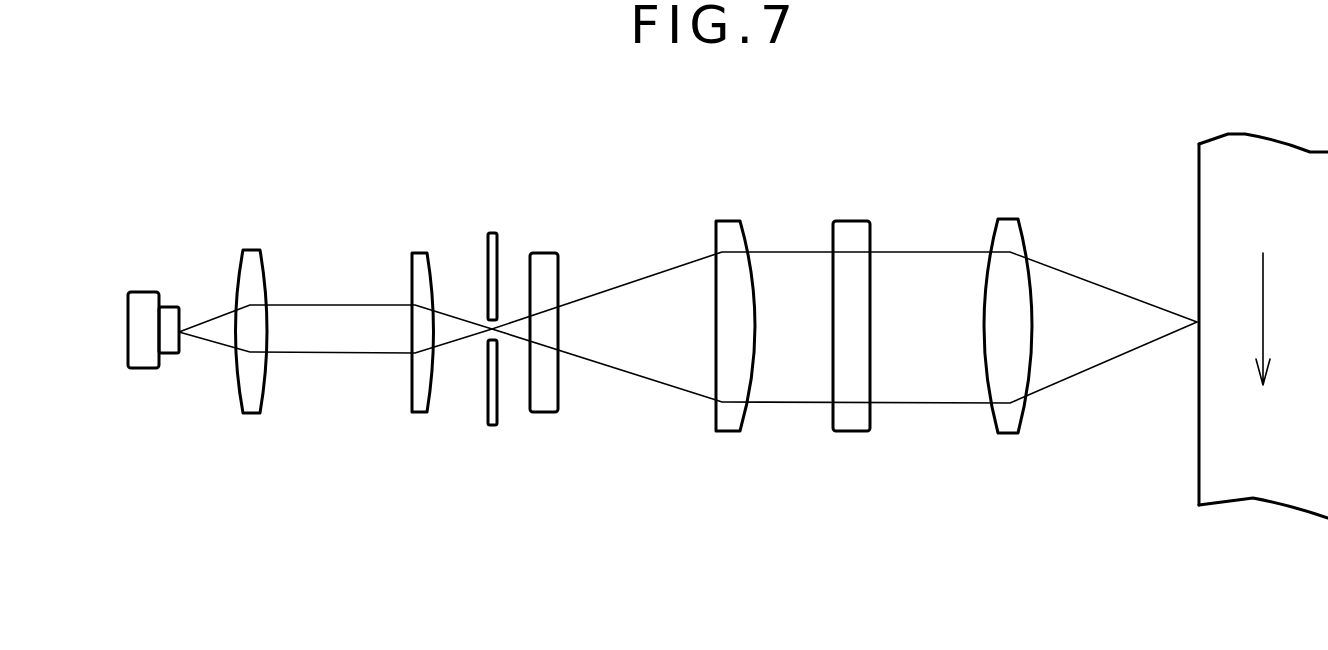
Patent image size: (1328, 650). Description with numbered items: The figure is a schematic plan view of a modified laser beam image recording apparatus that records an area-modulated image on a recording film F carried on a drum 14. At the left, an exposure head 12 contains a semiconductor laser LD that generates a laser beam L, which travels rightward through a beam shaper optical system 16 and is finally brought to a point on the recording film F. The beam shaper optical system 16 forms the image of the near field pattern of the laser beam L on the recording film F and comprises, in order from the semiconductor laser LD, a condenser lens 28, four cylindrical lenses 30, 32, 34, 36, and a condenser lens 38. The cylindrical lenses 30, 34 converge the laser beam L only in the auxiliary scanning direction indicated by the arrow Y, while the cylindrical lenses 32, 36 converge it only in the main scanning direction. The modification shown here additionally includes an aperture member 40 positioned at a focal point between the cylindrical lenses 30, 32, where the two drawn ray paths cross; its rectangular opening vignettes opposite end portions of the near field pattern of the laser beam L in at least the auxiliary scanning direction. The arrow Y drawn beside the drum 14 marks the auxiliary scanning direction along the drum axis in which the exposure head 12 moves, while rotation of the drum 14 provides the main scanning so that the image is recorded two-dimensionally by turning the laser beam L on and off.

The exposure head 12 is at (396, 446).
The semiconductor laser LD is at (168, 306).
The laser beam L is at (210, 317).
The beam shaper optical system 16 is at (213, 143).
The condenser lens 28 is at (252, 253).
The cylindrical lens 30 is at (420, 257).
The cylindrical lens 32 is at (547, 258).
The aperture member 40 is at (493, 425).
The cylindrical lens 34 is at (730, 227).
The cylindrical lens 36 is at (857, 227).
The condenser lens 38 is at (1008, 227).
The recording film F is at (1199, 177).
The drum 14 is at (1215, 453).
The auxiliary scanning direction Y is at (1276, 319).